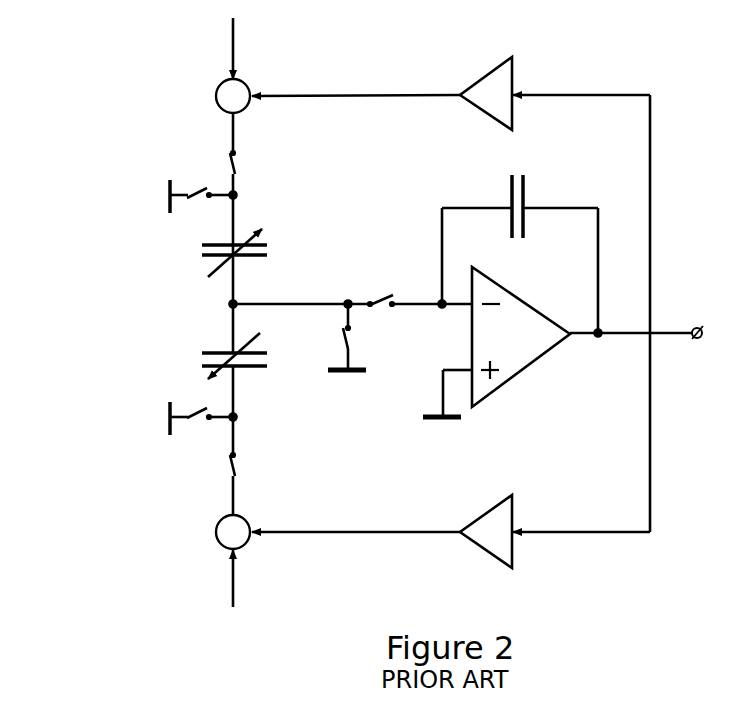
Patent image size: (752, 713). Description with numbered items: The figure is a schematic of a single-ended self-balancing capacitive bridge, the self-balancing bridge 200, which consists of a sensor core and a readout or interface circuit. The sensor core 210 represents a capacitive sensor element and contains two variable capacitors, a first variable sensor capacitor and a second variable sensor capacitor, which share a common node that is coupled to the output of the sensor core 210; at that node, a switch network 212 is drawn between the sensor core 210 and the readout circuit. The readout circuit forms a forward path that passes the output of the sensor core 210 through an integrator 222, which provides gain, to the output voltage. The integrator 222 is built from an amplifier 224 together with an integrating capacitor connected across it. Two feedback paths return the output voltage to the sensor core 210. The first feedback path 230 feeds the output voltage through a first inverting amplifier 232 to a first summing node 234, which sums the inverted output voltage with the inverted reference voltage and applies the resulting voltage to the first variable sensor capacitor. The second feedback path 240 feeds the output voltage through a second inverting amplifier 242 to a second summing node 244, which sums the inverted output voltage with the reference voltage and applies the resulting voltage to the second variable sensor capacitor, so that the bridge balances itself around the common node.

The self-balancing bridge 200 is at (108, 68).
The sensor core 210 is at (148, 280).
The switch network 212 is at (337, 269).
The integrator 222 is at (546, 368).
The amplifier 224 is at (492, 390).
The first feedback path 230 is at (646, 166).
The first inverting amplifier 232 is at (482, 78).
The first summing node 234 is at (246, 84).
The second feedback path 240 is at (647, 445).
The second inverting amplifier 242 is at (482, 548).
The second summing node 244 is at (247, 545).